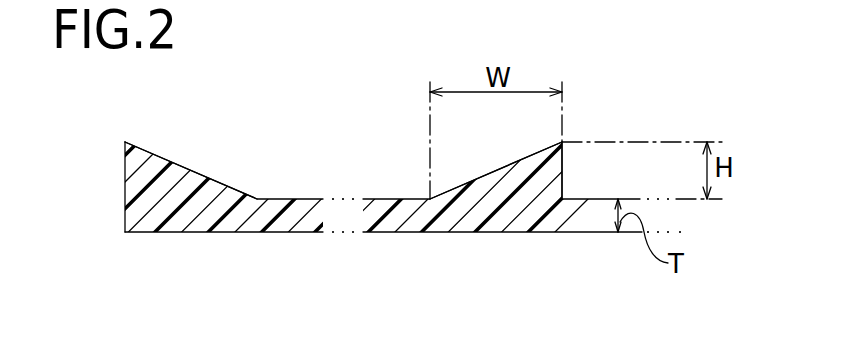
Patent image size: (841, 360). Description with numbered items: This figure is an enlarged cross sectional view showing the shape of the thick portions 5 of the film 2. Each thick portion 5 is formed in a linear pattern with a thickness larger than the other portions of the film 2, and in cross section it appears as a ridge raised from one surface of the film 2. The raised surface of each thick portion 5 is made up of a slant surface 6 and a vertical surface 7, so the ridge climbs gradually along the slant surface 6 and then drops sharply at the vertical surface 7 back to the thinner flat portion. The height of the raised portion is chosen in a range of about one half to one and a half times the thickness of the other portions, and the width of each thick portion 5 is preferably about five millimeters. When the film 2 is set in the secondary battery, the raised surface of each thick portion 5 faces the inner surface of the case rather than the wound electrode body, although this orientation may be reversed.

The film 2 is at (652, 93).
The thick portion 5 is at (257, 250).
The slant surface 6 is at (192, 171).
The vertical surface 7 is at (125, 184).